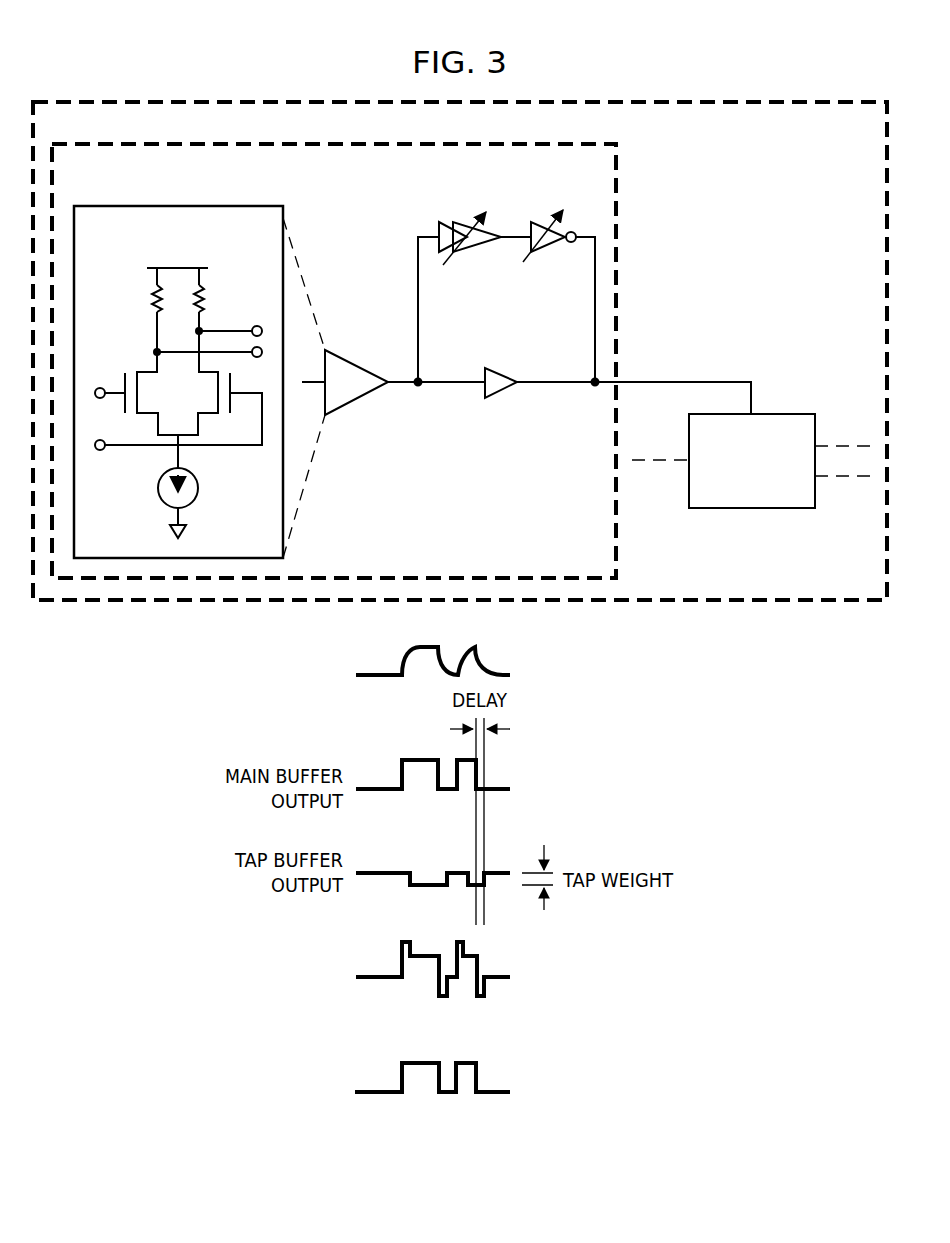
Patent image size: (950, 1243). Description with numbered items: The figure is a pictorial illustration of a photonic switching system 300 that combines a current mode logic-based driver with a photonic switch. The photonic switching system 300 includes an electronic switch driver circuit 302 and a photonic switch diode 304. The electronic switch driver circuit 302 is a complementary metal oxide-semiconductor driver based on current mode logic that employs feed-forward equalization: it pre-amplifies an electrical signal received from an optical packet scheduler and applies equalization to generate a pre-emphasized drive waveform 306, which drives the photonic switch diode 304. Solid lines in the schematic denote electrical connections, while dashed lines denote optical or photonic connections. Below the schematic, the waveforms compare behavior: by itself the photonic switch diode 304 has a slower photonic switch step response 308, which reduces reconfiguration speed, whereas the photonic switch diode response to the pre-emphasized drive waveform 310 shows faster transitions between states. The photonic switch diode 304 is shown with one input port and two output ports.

The photonic switching system 300 is at (232, 99).
The electronic switch driver circuit 302 is at (445, 418).
The photonic switch diode 304 is at (760, 508).
The pre-emphasized drive waveform 306 is at (519, 942).
The photonic switch step response 308 is at (519, 645).
The photonic switch diode response to the pre-emphasized drive waveform 310 is at (519, 1055).